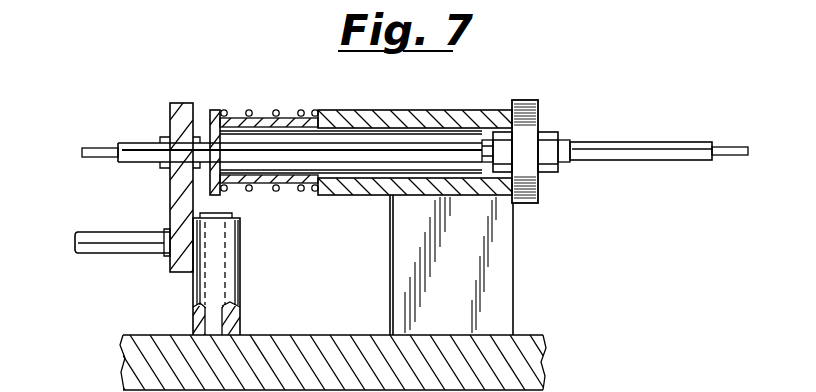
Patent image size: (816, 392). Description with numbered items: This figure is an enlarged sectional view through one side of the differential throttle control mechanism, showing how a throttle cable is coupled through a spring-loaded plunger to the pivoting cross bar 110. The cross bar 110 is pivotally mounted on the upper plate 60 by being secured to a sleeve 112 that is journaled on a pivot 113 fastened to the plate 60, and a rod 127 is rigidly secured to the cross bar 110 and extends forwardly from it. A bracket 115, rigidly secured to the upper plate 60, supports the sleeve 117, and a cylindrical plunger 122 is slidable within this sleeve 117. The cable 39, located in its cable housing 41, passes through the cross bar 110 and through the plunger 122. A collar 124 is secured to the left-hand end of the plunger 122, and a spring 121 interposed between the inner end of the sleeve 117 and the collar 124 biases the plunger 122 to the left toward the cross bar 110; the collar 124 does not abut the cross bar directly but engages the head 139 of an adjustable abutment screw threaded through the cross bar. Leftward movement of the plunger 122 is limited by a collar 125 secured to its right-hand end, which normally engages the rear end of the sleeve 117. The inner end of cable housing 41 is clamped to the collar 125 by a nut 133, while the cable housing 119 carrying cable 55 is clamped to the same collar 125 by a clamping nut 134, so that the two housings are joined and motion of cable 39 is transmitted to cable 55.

The cable 39 is at (95, 157).
The cable housing 41 is at (125, 143).
The cable 55 is at (724, 147).
The upper plate 60 is at (318, 335).
The cross bar 110 is at (178, 103).
The sleeve 112 is at (242, 250).
The pivot 113 is at (215, 322).
The bracket 115 is at (513, 297).
The sleeve 117 is at (430, 108).
The cable housing 119 is at (605, 142).
The spring 121 is at (249, 112).
The cylindrical plunger 122 is at (287, 110).
The collar 124 is at (213, 110).
The collar 125 is at (528, 100).
The rod 127 is at (110, 232).
The nut 133 is at (500, 132).
The clamping nut 134 is at (560, 132).
The head 139 is at (165, 137).